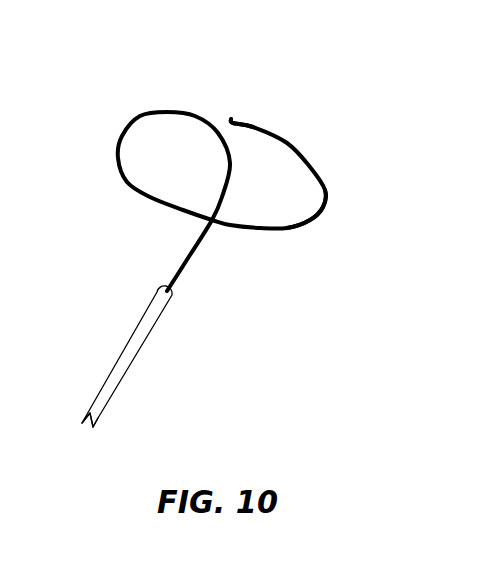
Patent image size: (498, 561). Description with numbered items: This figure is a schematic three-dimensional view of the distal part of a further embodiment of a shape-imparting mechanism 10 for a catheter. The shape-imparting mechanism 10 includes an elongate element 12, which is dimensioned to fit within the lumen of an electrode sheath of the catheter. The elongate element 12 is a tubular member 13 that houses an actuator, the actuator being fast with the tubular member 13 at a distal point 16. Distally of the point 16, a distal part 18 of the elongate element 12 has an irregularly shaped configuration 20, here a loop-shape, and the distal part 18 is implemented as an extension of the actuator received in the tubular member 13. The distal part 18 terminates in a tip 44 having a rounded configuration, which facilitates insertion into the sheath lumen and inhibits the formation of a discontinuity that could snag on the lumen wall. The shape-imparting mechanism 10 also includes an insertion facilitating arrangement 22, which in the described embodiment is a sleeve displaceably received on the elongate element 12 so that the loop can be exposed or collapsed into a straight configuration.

The shape-imparting mechanism 10 is at (229, 238).
The elongate element 12 is at (142, 290).
The tubular member 13 is at (195, 247).
The distal point 16 is at (230, 162).
The distal part 18 is at (265, 156).
The irregularly shaped configuration 20 is at (308, 223).
The insertion facilitating arrangement 22 is at (112, 388).
The tip 44 is at (232, 122).